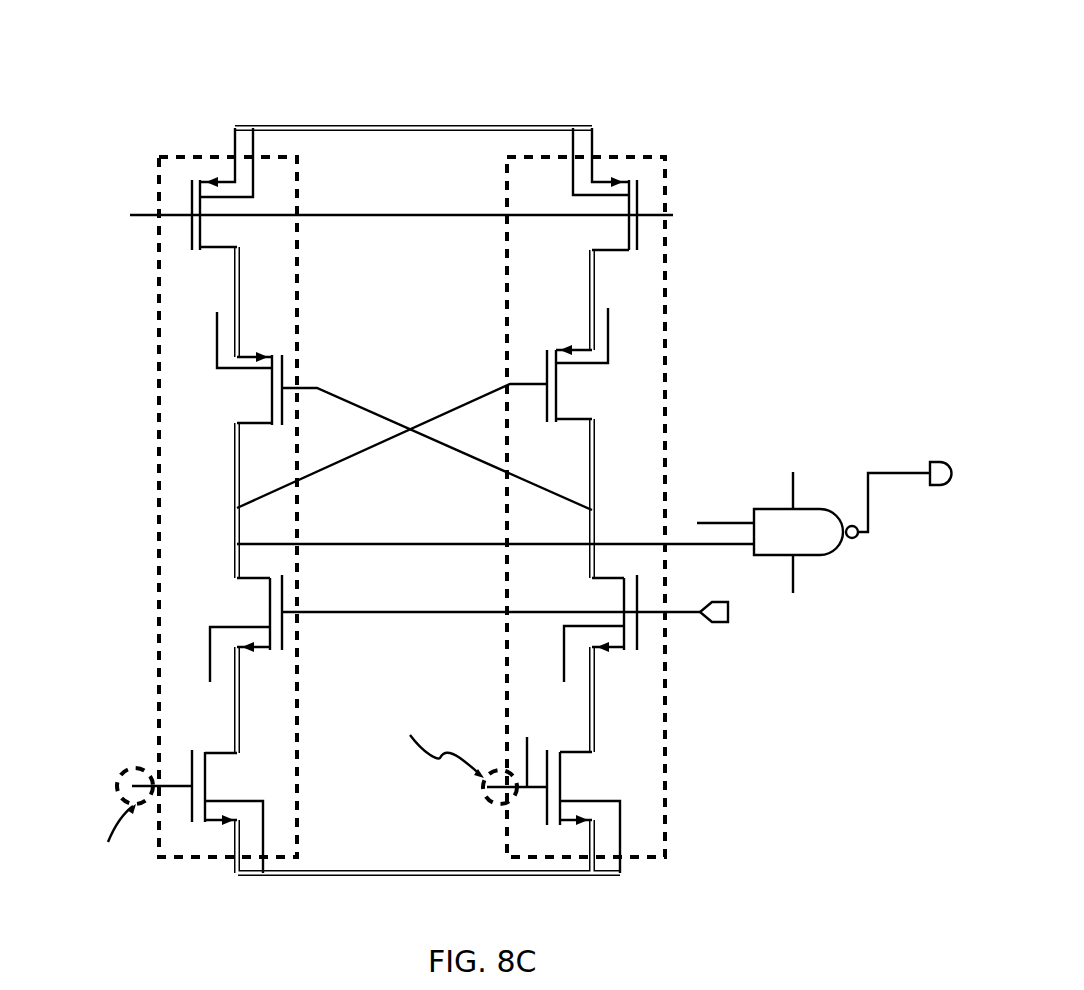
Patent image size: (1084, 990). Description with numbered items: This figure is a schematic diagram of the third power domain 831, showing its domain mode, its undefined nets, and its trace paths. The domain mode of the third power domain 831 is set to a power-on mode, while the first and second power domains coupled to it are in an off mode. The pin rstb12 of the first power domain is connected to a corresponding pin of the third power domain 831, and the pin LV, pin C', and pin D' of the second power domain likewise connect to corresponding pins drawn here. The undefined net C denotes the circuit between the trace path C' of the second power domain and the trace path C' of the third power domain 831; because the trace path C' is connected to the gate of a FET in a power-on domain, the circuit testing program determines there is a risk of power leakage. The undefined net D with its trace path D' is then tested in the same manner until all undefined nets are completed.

The third power domain 831 is at (628, 50).
The undefined net C is at (190, 152).
The undefined net D is at (670, 796).
The pin rstb12 is at (725, 623).